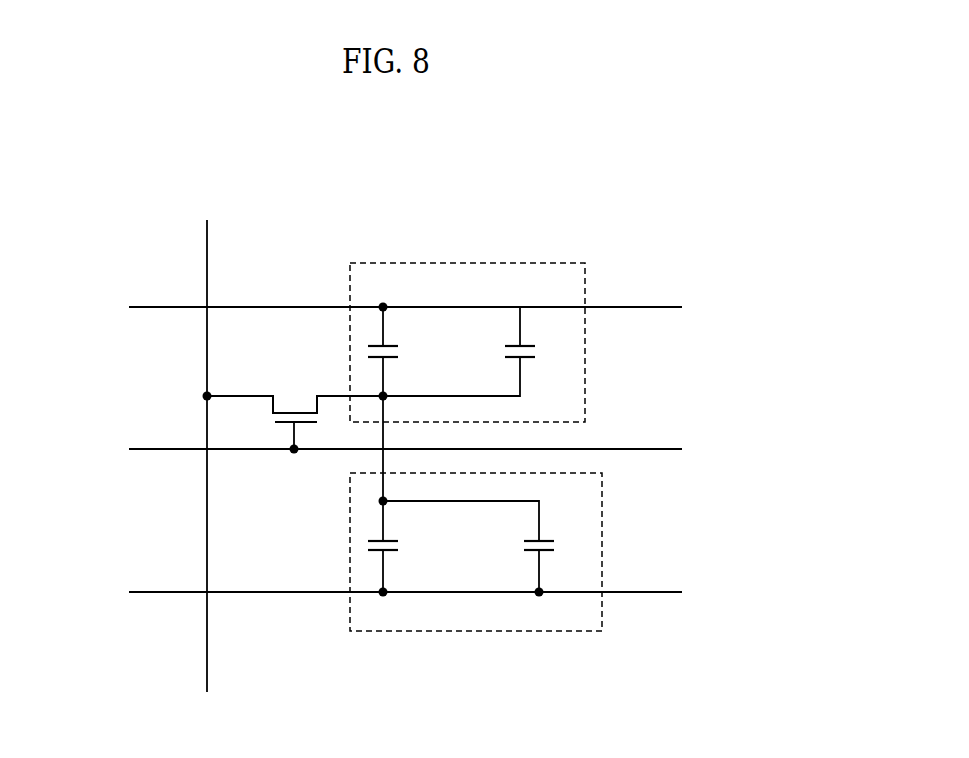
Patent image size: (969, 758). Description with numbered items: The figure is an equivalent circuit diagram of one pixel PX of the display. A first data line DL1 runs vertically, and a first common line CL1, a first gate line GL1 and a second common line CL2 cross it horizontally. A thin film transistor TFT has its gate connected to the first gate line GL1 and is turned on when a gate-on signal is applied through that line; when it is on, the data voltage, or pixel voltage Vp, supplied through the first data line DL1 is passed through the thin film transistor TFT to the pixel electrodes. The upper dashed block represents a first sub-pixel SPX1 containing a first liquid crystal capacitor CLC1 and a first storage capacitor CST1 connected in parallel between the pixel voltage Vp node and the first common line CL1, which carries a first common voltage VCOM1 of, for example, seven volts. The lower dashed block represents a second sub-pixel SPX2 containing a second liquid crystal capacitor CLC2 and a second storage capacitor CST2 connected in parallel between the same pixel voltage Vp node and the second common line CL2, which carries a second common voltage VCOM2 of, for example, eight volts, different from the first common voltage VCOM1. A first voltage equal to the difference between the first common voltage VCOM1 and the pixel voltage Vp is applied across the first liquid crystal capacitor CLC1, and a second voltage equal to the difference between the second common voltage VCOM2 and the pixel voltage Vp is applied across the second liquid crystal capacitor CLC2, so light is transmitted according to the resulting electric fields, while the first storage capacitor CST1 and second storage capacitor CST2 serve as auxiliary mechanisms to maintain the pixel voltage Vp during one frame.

The first data line DL1 is at (207, 439).
The first common line CL1 is at (384, 307).
The first gate line GL1 is at (384, 449).
The second common line CL2 is at (384, 592).
The thin film transistor TFT is at (299, 393).
The pixel PX is at (637, 210).
The first sub-pixel SPX1 is at (514, 263).
The second sub-pixel SPX2 is at (558, 631).
The first common voltage VCOM1 is at (397, 293).
The second common voltage VCOM2 is at (397, 607).
The pixel voltage Vp is at (395, 384).
The first liquid crystal capacitor CLC1 is at (408, 351).
The first storage capacitor CST1 is at (484, 351).
The second liquid crystal capacitor CLC2 is at (408, 494).
The second storage capacitor CST2 is at (493, 549).